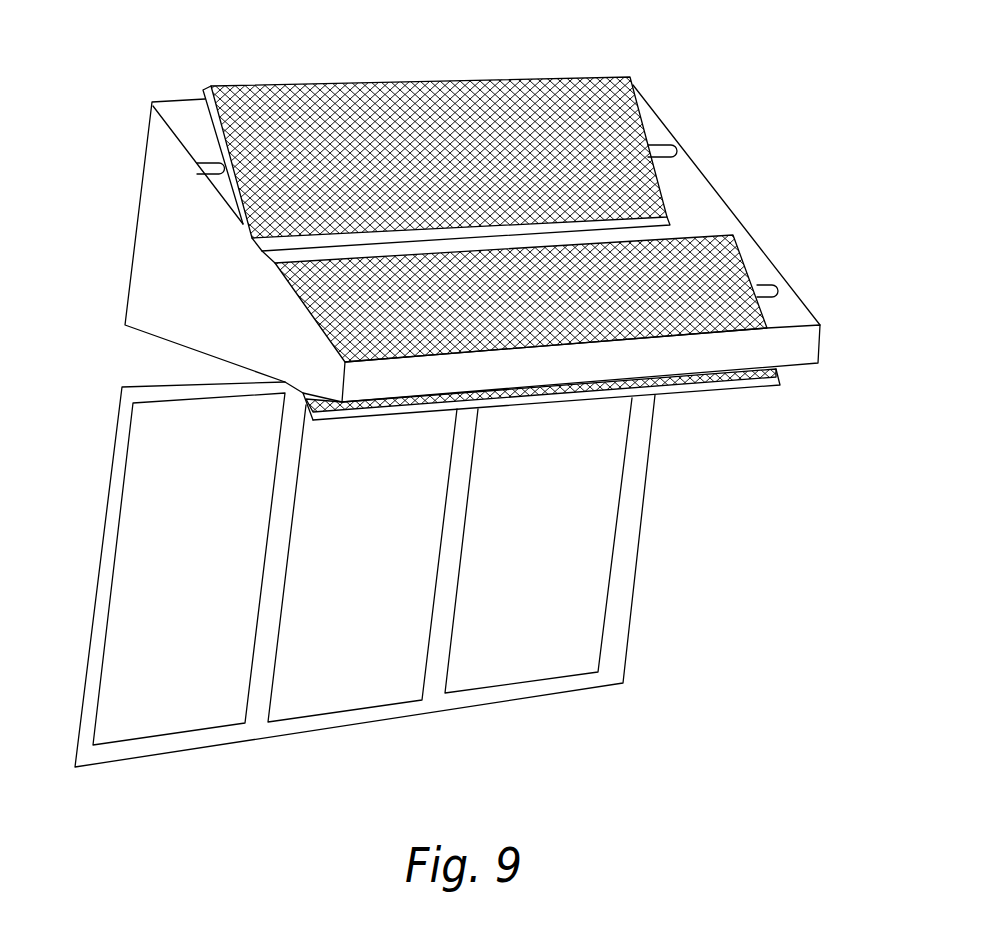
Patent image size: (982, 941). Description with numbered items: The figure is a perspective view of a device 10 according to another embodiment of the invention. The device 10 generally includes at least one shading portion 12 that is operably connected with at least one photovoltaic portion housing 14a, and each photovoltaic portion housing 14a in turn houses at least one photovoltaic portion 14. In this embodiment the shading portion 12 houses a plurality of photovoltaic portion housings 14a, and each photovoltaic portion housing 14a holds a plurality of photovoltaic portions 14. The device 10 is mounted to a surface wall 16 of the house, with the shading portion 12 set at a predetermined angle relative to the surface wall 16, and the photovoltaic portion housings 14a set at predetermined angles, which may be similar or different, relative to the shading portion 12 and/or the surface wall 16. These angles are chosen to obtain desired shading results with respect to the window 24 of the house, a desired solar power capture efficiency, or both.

The device 10 is at (726, 120).
The shading portion 12 is at (732, 214).
The photovoltaic portion 14 is at (252, 98).
The photovoltaic portion housing 14a is at (202, 88).
The surface wall 16 is at (697, 418).
The window 24 is at (625, 531).